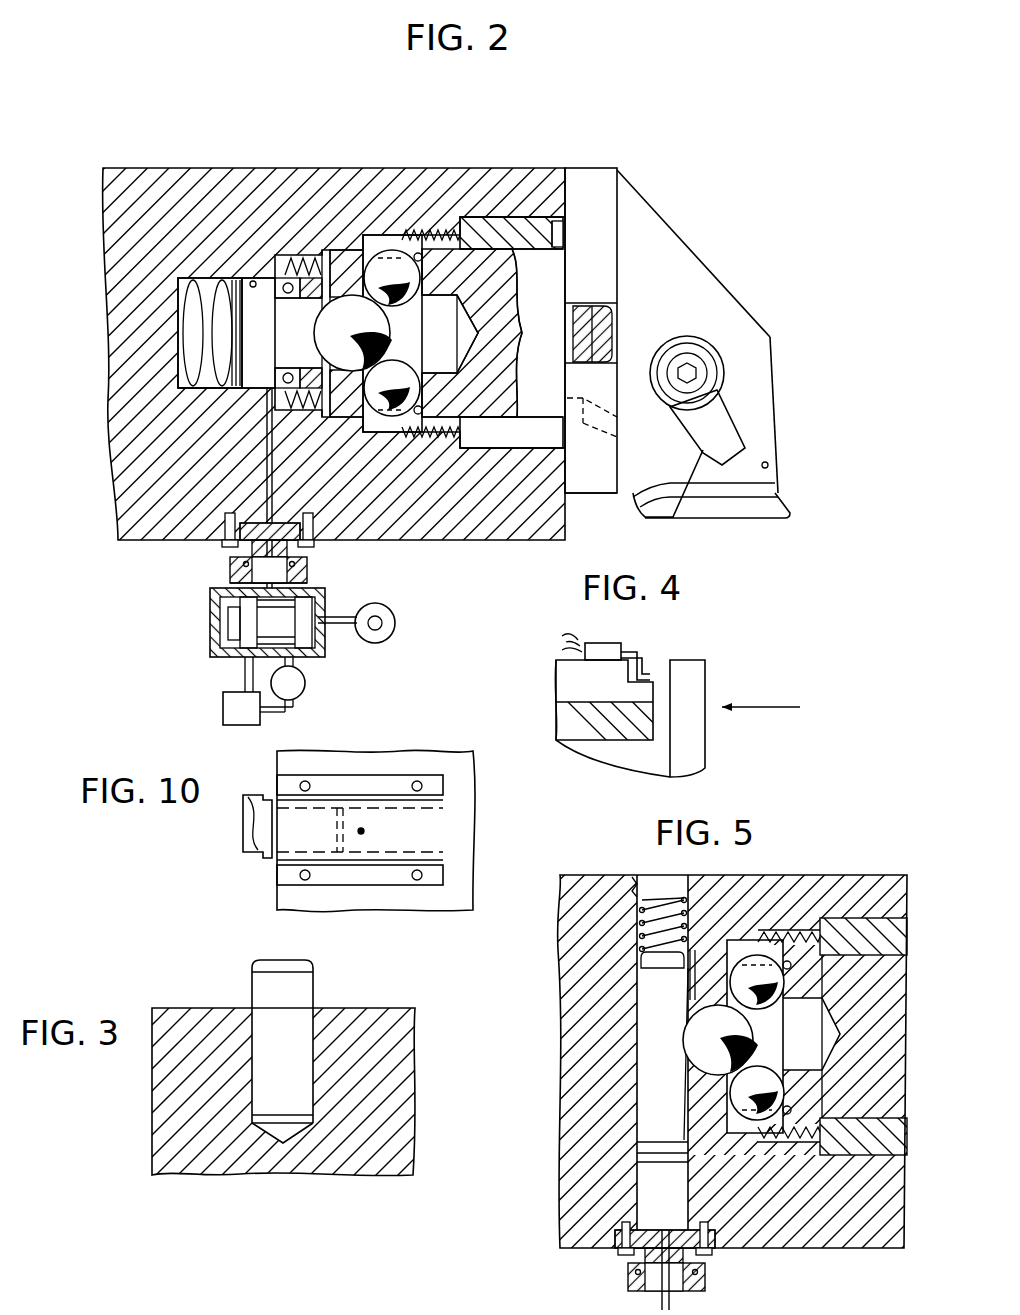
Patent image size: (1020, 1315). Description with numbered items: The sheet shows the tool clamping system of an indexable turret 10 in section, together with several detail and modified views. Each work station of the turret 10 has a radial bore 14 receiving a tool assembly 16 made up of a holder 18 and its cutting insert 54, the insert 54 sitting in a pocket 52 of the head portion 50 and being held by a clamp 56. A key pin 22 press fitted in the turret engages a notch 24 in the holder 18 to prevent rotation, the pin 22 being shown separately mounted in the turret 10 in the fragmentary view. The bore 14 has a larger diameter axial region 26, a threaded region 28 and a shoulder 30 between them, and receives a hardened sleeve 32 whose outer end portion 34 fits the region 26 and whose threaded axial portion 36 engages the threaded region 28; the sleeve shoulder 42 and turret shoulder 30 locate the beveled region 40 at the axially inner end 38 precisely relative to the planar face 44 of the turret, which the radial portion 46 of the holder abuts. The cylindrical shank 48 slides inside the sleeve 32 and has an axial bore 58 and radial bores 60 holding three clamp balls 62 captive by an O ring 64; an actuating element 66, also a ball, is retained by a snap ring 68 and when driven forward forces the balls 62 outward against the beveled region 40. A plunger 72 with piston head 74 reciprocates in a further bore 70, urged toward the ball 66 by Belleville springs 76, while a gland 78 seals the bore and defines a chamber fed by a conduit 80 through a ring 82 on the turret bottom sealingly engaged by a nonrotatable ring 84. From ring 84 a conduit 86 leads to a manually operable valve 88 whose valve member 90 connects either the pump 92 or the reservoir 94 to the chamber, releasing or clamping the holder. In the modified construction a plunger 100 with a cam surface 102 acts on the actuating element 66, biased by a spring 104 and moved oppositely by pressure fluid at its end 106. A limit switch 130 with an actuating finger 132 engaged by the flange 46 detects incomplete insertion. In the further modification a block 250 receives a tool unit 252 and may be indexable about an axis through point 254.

In FIG. 2, the turret 10 is at (225, 168).
In FIG. 3, the turret 10 is at (387, 1008).
In FIG. 2, the radial bore 14 is at (545, 220).
In FIG. 4, the tool assembly 16 is at (712, 755).
In FIG. 2, the holder 18 is at (652, 208).
In FIG. 2, the key pin 22 is at (585, 305).
In FIG. 3, the key pin 22 is at (302, 992).
In FIG. 2, the notch 24 is at (620, 318).
In FIG. 2, the larger diameter axial region 26 is at (566, 222).
In FIG. 2, the threaded region 28 is at (425, 232).
In FIG. 2, the shoulder 30 is at (470, 249).
In FIG. 5, the shoulder 30 is at (510, 657).
In FIG. 2, the hardened sleeve 32 is at (500, 235).
In FIG. 2, the axially outer end portion 34 is at (566, 240).
In FIG. 2, the threaded axial portion 36 is at (443, 237).
In FIG. 2, the axially inner end 38 is at (388, 235).
In FIG. 2, the beveled region 40 is at (393, 278).
In FIG. 2, the sleeve shoulder 42 is at (460, 442).
In FIG. 2, the planar face 44 is at (568, 517).
In FIG. 2, the radial portion 46 is at (600, 170).
In FIG. 4, the radial portion 46 is at (707, 692).
In FIG. 2, the cylindrical shank 48 is at (522, 400).
In FIG. 2, the head portion 50 is at (748, 327).
In FIG. 2, the pocket 52 is at (770, 465).
In FIG. 2, the cutting insert 54 is at (790, 508).
In FIG. 2, the clamp 56 is at (720, 405).
In FIG. 2, the axial bore 58 is at (437, 372).
In FIG. 2, the radial bores 60 is at (353, 333).
In FIG. 2, the balls 62 is at (422, 322).
In FIG. 2, the O ring 64 is at (393, 388).
In FIG. 2, the actuating element 66 is at (312, 324).
In FIG. 5, the actuating element 66 is at (700, 1029).
In FIG. 2, the snap ring 68 is at (312, 355).
In FIG. 2, the further bore 70 is at (253, 282).
In FIG. 2, the plunger 72 is at (237, 388).
In FIG. 2, the piston head 74 is at (240, 352).
In FIG. 2, the Belleville springs 76 is at (180, 310).
In FIG. 2, the gland 78 is at (300, 262).
In FIG. 2, the conduit 80 is at (267, 477).
In FIG. 2, the ring 82 is at (285, 549).
In FIG. 2, the nonrotatable ring 84 is at (230, 565).
In FIG. 2, the conduit 86 is at (270, 580).
In FIG. 2, the manually operable valve 88 is at (325, 645).
In FIG. 2, the valve member 90 is at (392, 627).
In FIG. 2, the pump 92 is at (306, 683).
In FIG. 2, the reservoir 94 is at (240, 708).
In FIG. 5, the plunger 100 is at (650, 995).
In FIG. 5, the cam surface 102 is at (680, 1062).
In FIG. 5, the spring 104 is at (665, 905).
In FIG. 5, the plunger end 106 is at (676, 1162).
In FIG. 4, the limit switch 130 is at (608, 643).
In FIG. 4, the actuating finger 132 is at (655, 675).
In FIG. 10, the block 250 is at (400, 782).
In FIG. 10, the tool unit 252 is at (265, 852).
In FIG. 10, the indexing point 254 is at (364, 831).